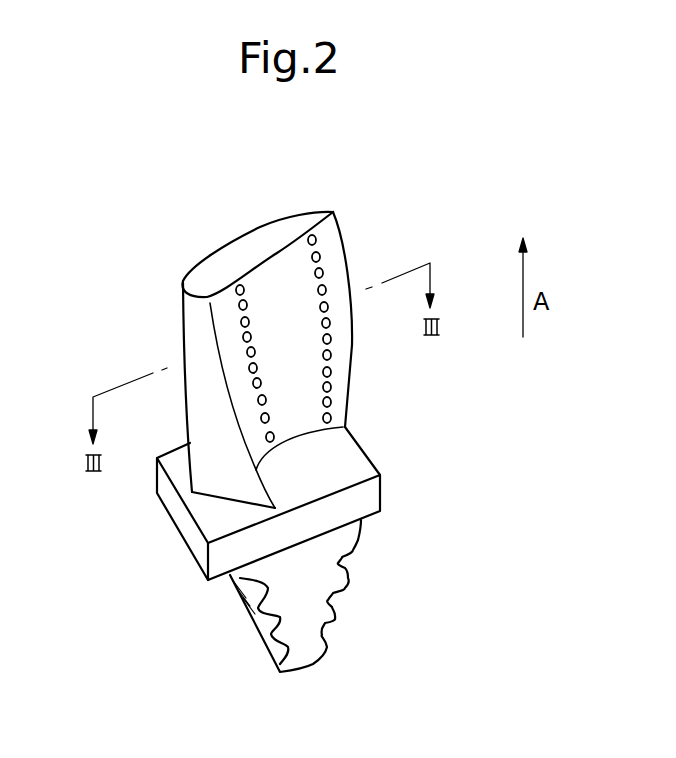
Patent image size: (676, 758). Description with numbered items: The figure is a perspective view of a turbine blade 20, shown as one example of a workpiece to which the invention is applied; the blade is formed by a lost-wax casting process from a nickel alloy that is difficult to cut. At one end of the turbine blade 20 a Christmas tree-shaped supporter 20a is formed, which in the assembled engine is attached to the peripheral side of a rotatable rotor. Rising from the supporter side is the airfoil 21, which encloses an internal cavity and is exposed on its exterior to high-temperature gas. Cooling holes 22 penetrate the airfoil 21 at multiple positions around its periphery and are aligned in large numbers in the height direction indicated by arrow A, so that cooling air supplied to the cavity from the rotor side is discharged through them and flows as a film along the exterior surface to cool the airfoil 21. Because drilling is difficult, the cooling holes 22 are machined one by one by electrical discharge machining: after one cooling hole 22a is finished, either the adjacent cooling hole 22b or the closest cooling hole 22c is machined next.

The turbine blade 20 is at (392, 205).
The supporter 20a is at (350, 588).
The airfoil 21 is at (183, 327).
The cooling holes 22 is at (241, 285).
The cooling hole 22a is at (266, 439).
The cooling hole 22b is at (261, 419).
The cooling hole 22c is at (329, 417).